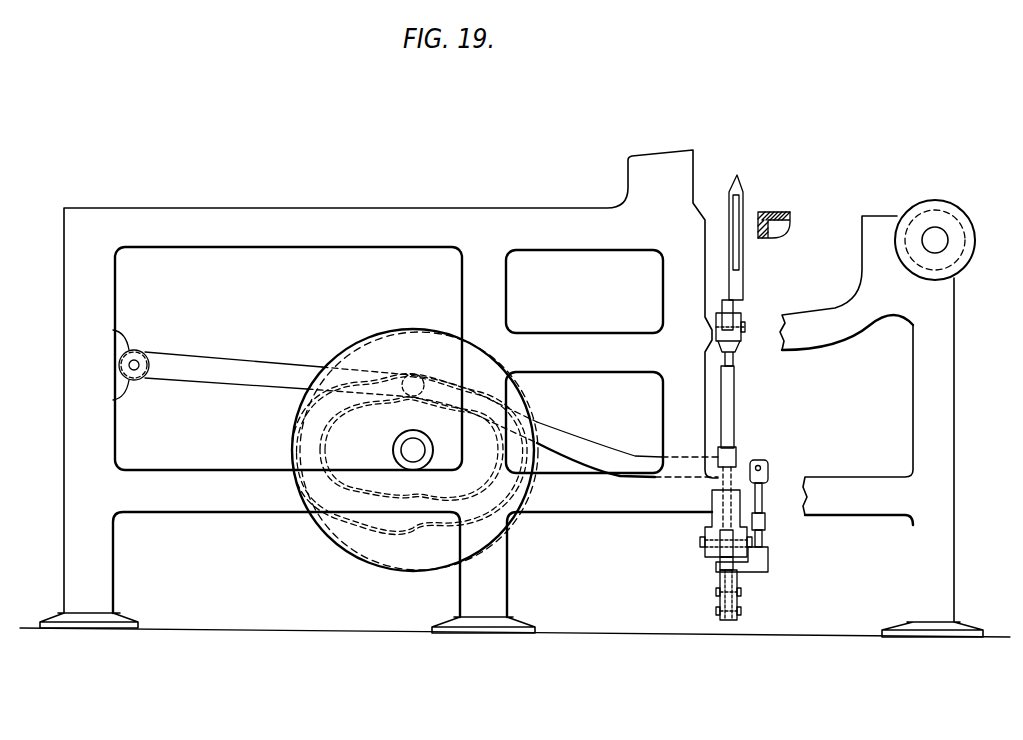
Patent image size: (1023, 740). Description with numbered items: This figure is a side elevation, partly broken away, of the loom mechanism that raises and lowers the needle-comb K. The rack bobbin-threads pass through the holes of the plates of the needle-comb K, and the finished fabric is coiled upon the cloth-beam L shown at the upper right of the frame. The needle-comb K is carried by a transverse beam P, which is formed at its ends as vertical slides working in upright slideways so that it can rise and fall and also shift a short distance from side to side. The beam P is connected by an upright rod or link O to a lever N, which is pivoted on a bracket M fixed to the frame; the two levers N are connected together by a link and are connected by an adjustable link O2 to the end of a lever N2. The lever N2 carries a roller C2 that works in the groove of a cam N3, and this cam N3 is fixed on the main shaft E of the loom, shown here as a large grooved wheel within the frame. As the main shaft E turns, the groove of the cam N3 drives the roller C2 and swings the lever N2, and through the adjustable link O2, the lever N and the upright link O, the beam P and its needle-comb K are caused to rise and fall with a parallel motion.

The needle-comb K is at (746, 231).
The cloth-beam L is at (935, 226).
The transverse beam P is at (738, 318).
The upright rod or link O is at (734, 448).
The lever N2 is at (640, 448).
The roller C2 is at (417, 377).
The cam N3 is at (415, 450).
The main shaft E is at (418, 447).
The bracket M is at (712, 530).
The adjustable link O2 is at (772, 522).
The lever N is at (728, 588).